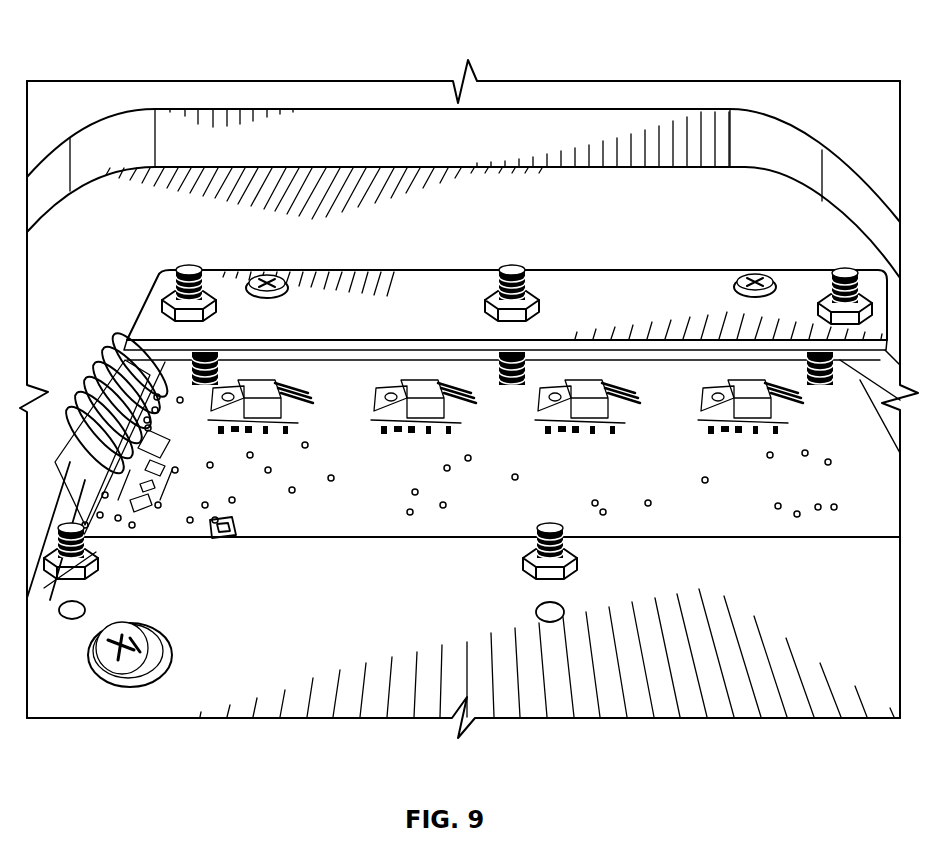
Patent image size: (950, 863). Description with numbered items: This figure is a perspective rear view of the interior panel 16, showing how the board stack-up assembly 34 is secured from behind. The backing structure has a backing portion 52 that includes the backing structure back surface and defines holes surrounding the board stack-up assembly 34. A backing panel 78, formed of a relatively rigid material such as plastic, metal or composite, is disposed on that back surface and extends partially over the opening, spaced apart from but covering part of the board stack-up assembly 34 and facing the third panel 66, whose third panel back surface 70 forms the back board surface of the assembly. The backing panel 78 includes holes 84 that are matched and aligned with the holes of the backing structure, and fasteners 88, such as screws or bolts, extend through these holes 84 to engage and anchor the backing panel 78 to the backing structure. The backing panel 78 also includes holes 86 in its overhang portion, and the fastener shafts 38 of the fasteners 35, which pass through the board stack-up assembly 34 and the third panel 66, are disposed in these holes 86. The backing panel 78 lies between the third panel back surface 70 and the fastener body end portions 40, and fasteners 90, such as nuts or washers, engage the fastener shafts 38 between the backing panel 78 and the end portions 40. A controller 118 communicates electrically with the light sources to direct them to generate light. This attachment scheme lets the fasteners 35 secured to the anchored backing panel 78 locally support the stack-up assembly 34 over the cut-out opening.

The interior panel 16 is at (590, 32).
The backing portion 52 is at (647, 188).
The third panel back surface 70 is at (148, 455).
The third panel 66 is at (205, 470).
The backing panel 78 is at (400, 300).
The board stack-up assembly 34 is at (505, 391).
The fastener 35 is at (455, 423).
The hole 86 is at (530, 302).
The fastener 88 is at (755, 276).
The fastener body end portion 40 is at (70, 540).
The fastener shaft 38 is at (85, 535).
The fastener 90 is at (96, 560).
The controller 118 is at (600, 410).
The hole 84 is at (140, 690).